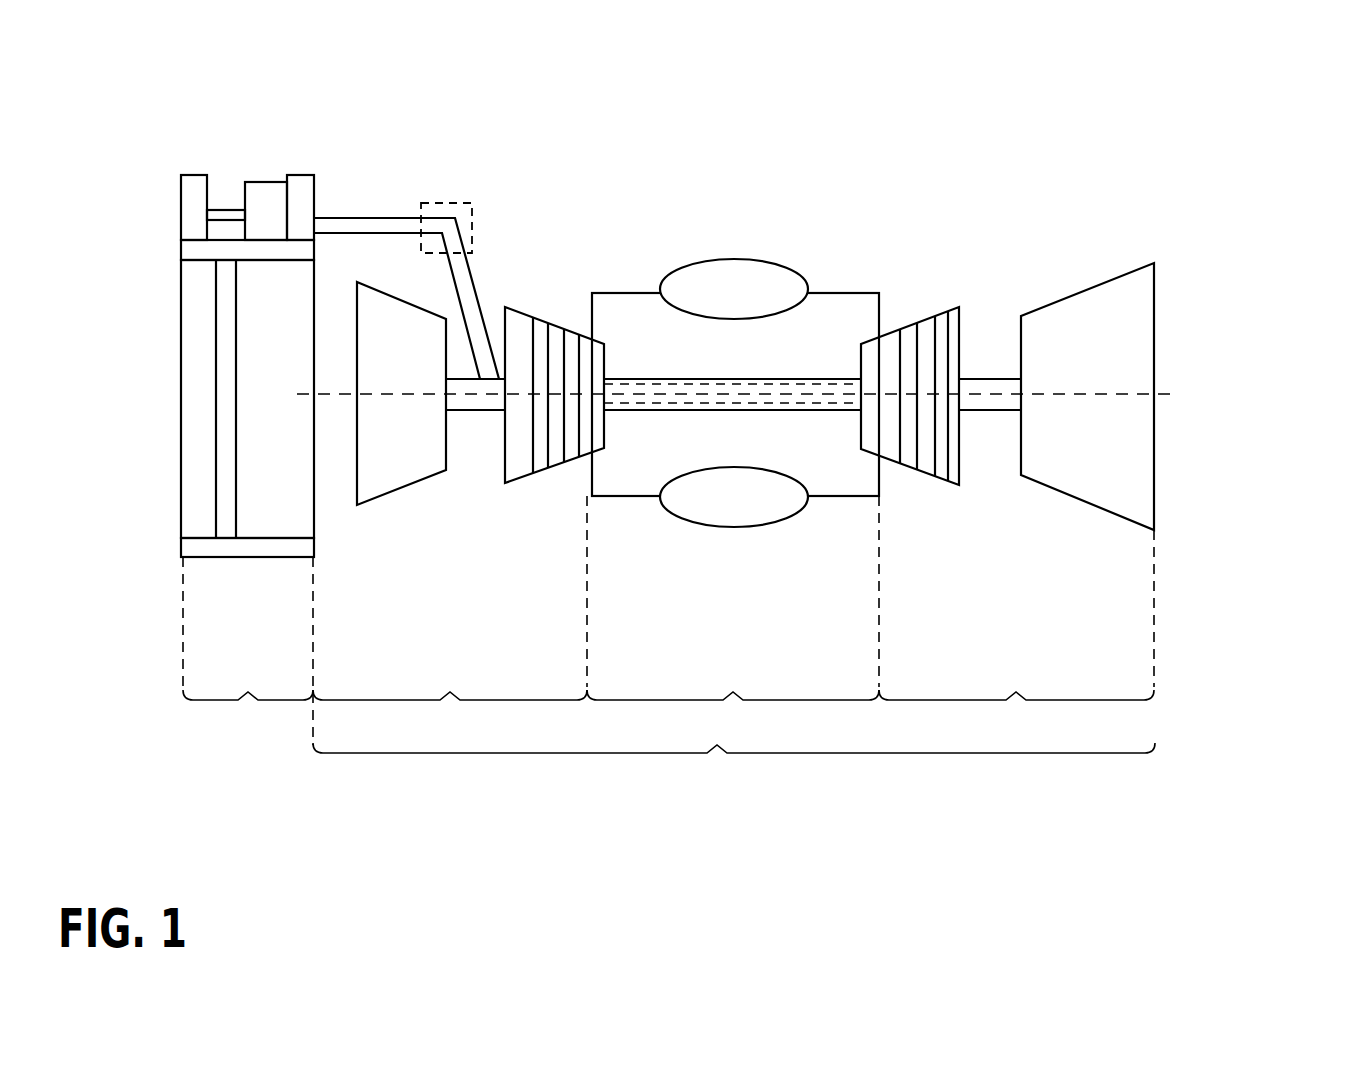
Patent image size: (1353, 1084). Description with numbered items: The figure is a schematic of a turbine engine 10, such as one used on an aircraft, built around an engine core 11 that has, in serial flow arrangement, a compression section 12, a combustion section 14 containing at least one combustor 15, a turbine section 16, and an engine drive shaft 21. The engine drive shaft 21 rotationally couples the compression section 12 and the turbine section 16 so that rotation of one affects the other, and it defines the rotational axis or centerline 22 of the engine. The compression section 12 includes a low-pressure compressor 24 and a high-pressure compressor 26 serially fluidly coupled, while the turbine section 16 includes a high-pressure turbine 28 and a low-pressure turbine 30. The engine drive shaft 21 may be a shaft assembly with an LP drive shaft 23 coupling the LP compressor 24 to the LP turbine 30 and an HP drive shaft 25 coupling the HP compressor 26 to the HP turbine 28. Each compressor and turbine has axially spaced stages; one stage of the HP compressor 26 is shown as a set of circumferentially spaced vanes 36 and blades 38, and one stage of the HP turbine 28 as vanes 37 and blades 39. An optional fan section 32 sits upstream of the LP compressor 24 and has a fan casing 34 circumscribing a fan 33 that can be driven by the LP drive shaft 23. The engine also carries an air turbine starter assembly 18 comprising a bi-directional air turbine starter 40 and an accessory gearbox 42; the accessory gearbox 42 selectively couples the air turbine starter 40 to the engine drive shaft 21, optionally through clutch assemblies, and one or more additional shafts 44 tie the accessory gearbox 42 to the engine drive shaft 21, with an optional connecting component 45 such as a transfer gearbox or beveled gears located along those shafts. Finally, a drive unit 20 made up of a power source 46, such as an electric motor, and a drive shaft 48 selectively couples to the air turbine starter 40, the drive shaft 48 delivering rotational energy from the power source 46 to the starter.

The turbine engine 10 is at (1343, 276).
The engine core 11 is at (734, 765).
The compression section 12 is at (450, 615).
The combustion section 14 is at (733, 615).
The combustor 15 is at (693, 525).
The turbine section 16 is at (1016, 632).
The air turbine starter assembly 18 is at (280, 165).
The drive unit 20 is at (202, 170).
The engine drive shaft 21 is at (733, 377).
The centerline 22 is at (1137, 393).
The LP drive shaft 23 is at (983, 412).
The low-pressure compressor 24 is at (393, 493).
The HP drive shaft 25 is at (792, 405).
The high-pressure compressor 26 is at (528, 300).
The high-pressure turbine 28 is at (963, 330).
The low-pressure turbine 30 is at (1104, 280).
The fan section 32 is at (248, 651).
The fan 33 is at (214, 505).
The fan casing 34 is at (298, 558).
The vanes 36 is at (537, 473).
The vanes 37 is at (911, 467).
The blades 38 is at (569, 465).
The blades 39 is at (942, 478).
The air turbine starter 40 is at (243, 182).
The accessory gearbox 42 is at (302, 175).
The additional shafts 44 is at (397, 215).
The connecting component 45 is at (473, 218).
The power source 46 is at (180, 208).
The drive shaft 48 is at (223, 208).